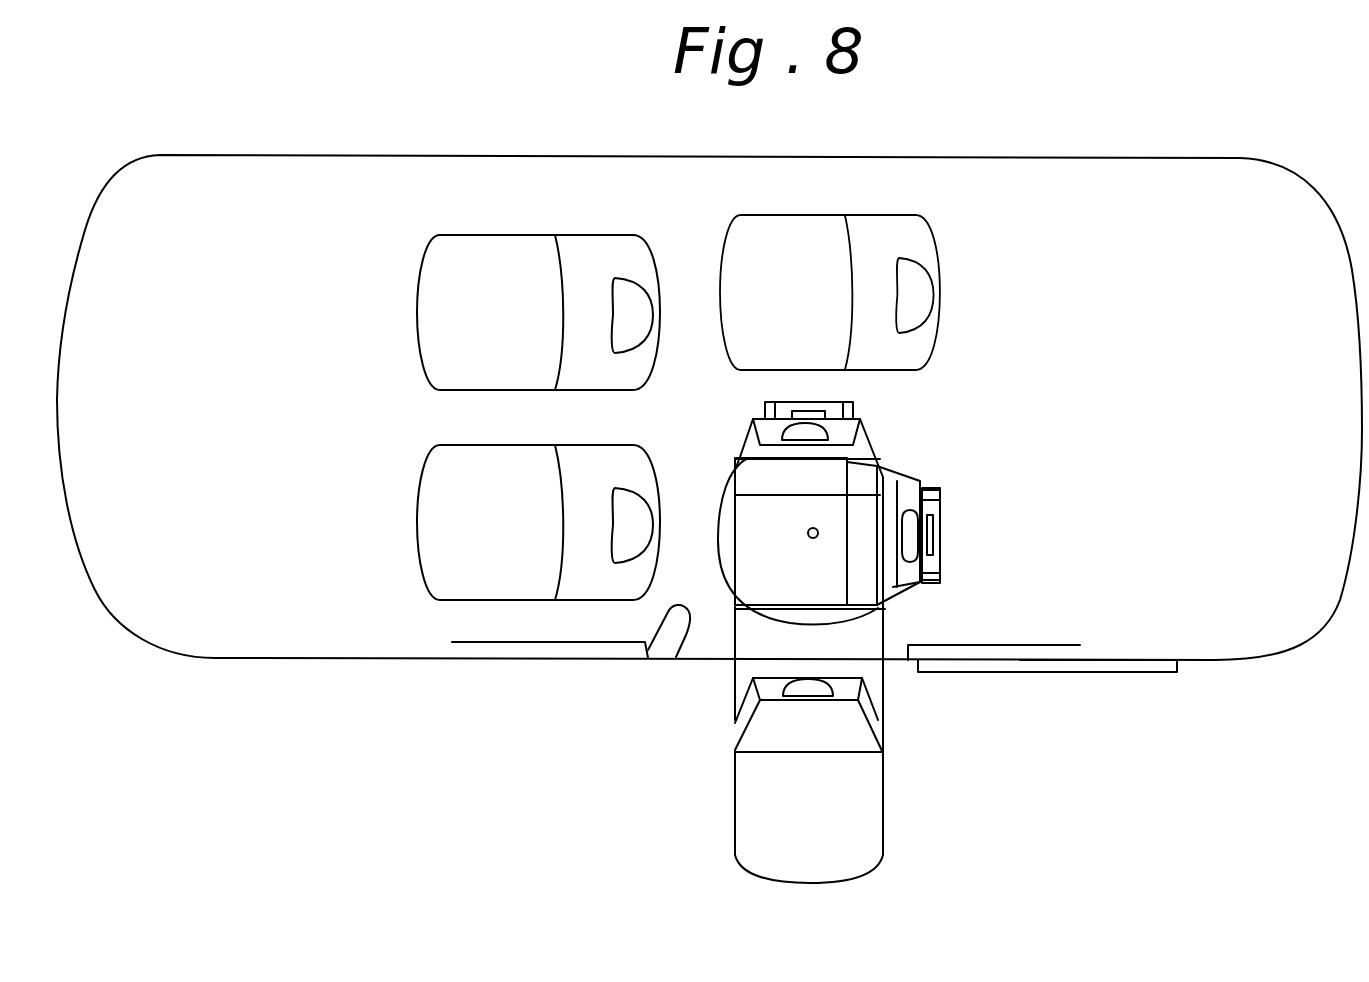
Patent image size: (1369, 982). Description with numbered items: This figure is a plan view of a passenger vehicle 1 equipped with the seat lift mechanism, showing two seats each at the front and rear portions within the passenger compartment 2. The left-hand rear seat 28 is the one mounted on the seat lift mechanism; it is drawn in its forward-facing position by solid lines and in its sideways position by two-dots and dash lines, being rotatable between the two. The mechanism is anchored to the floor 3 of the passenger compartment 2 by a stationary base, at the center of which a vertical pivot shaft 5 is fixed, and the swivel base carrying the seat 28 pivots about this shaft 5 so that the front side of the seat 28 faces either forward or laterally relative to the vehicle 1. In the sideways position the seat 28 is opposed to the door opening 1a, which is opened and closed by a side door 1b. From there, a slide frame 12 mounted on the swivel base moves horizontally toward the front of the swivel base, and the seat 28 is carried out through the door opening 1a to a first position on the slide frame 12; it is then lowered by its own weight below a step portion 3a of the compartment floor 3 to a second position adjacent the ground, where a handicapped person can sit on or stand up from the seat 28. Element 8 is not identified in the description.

The vehicle 1 is at (528, 155).
The door opening 1a is at (893, 660).
The side door 1b is at (1070, 673).
The passenger compartment 2 is at (1097, 333).
The floor 3 is at (1017, 627).
The step portion 3a is at (676, 657).
The vertical pivot shaft 5 is at (808, 531).
The fixing brackets 8 is at (938, 487).
The slide frame 12 is at (940, 532).
The rear seat 28 is at (745, 518).